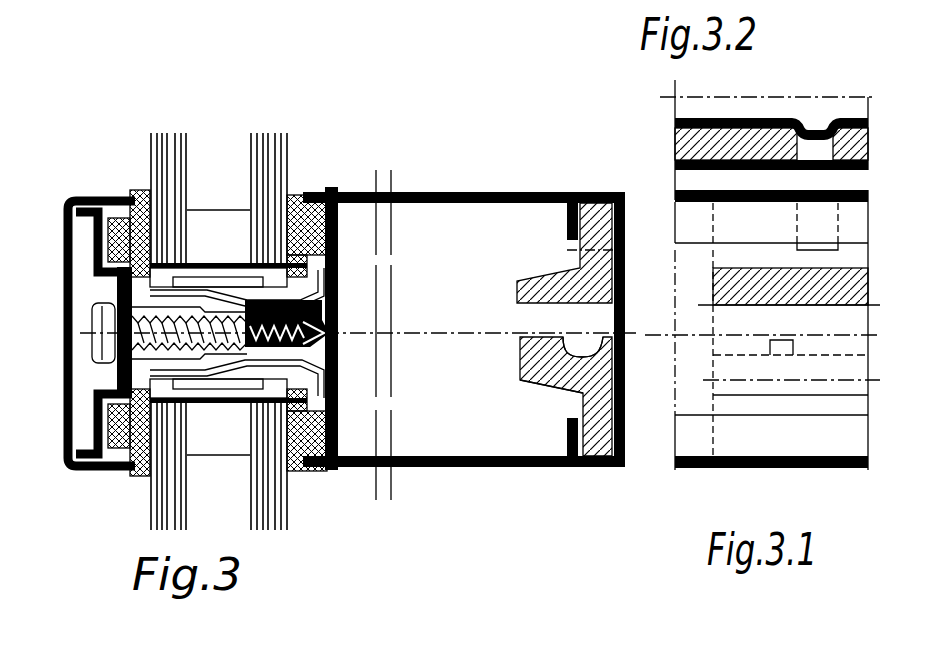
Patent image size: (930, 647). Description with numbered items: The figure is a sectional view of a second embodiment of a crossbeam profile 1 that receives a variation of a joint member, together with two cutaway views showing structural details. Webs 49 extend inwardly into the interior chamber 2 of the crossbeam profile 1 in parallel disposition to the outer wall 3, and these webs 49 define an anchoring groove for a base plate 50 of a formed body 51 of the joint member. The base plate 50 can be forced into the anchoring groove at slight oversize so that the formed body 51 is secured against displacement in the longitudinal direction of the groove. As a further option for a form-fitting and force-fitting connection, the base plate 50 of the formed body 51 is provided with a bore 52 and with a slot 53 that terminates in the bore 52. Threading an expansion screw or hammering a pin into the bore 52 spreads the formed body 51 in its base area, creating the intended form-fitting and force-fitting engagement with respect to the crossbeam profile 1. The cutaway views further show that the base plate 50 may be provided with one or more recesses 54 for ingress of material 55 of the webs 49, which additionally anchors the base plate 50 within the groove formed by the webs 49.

In FIG. 3, the crossbeam profile 1 is at (428, 188).
In FIG. 3, the interior chamber 2 is at (435, 412).
In FIG. 3, the outer wall 3 is at (627, 410).
In FIG. 3, the webs 49 is at (565, 221).
In FIG. 3, the base plate 50 is at (594, 458).
In FIG. 3, the formed body 51 is at (530, 373).
In FIG. 3, the bore 52 is at (578, 337).
In FIG. 3, the slot 53 is at (543, 340).
In FIG. 3.2, the recesses 54 is at (818, 150).
In FIG. 3.1, the recesses 54 is at (846, 352).
In FIG. 3.2, the material 55 is at (806, 128).